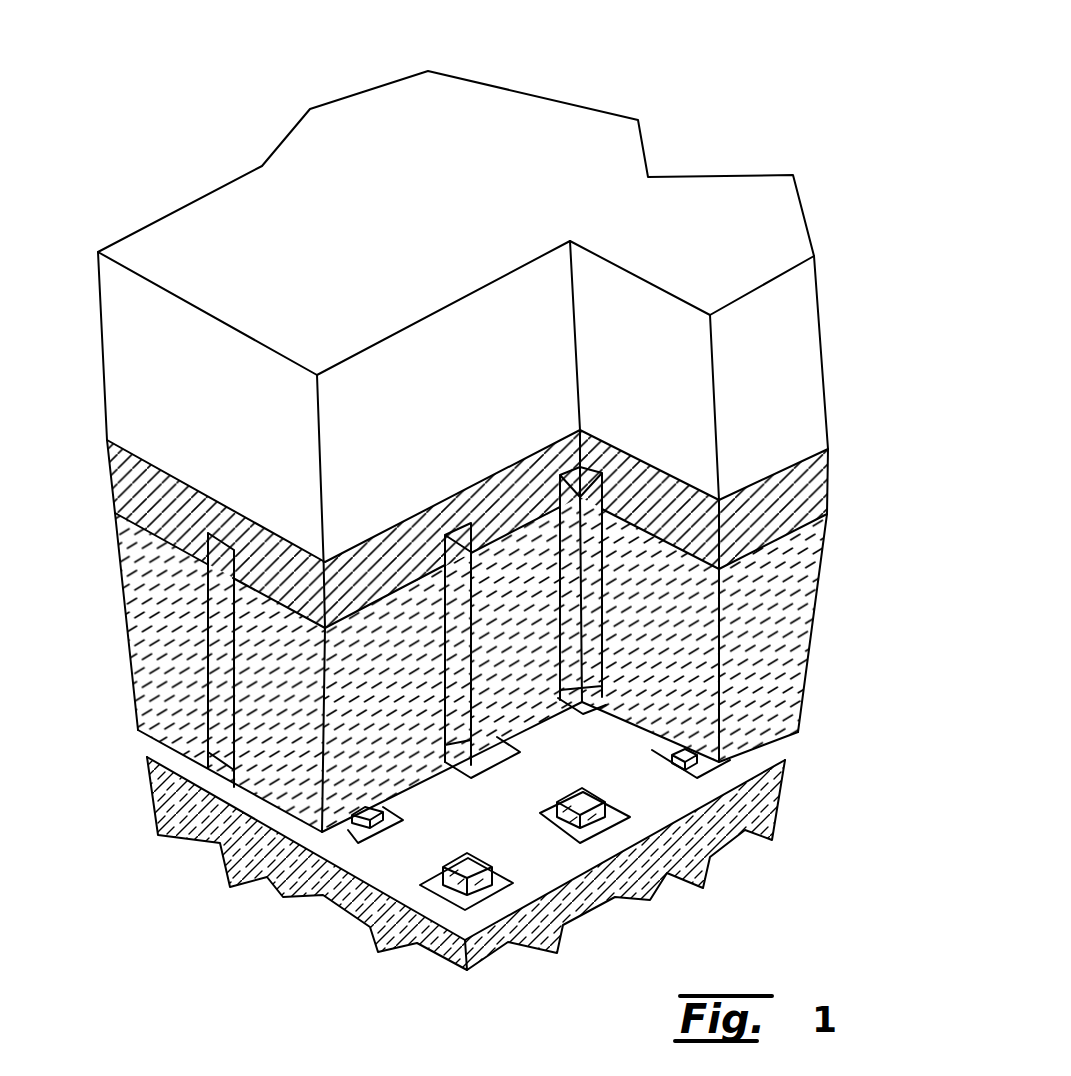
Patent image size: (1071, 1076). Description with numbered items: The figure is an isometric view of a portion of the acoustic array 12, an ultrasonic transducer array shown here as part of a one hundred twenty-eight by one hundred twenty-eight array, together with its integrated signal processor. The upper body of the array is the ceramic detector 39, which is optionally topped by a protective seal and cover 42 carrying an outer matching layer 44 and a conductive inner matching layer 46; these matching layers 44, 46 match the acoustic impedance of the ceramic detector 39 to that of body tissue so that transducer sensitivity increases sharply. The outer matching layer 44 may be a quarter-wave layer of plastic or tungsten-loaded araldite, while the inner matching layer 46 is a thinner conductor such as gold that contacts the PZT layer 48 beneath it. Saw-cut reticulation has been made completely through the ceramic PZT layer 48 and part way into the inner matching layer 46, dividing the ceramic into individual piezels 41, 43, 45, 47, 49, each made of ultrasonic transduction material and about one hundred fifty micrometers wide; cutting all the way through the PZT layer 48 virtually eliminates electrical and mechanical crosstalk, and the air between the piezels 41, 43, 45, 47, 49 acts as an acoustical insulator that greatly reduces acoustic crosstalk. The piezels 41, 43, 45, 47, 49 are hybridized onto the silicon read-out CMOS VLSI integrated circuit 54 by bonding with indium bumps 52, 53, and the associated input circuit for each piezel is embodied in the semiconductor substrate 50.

The acoustic array 12 is at (730, 93).
The ceramic detector 39 is at (832, 601).
The protective seal and cover 42 is at (717, 243).
The outer matching layer 44 is at (102, 353).
The inner matching layer 46 is at (108, 476).
The PZT layer 48 is at (124, 603).
The piezel 41 is at (144, 668).
The piezel 49 is at (804, 684).
The piezel 43 is at (416, 775).
The piezel 45 is at (525, 723).
The piezel 47 is at (567, 712).
The semiconductor substrate 50 is at (786, 798).
The indium bump 52 is at (490, 872).
The indium bump 53 is at (593, 798).
The CMOS VLSI integrated circuit 54 is at (436, 874).